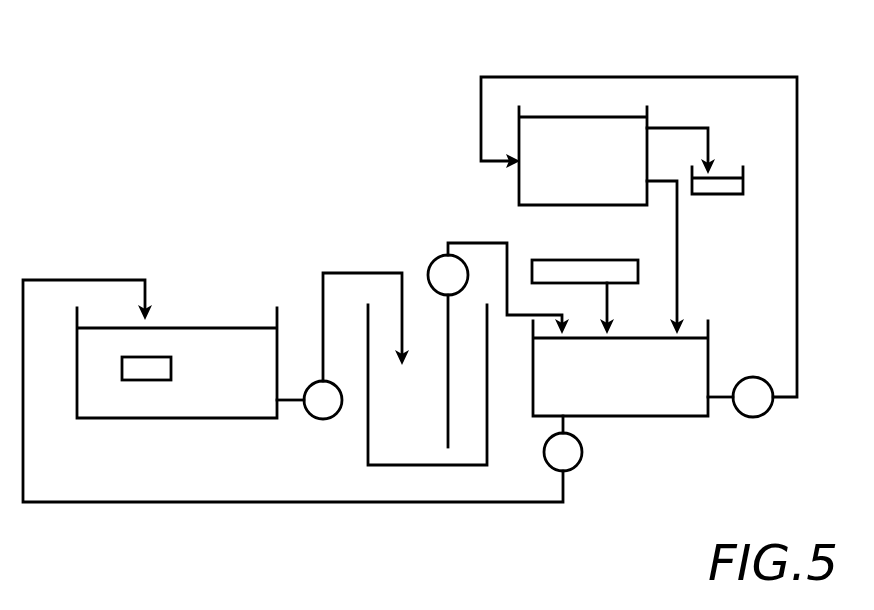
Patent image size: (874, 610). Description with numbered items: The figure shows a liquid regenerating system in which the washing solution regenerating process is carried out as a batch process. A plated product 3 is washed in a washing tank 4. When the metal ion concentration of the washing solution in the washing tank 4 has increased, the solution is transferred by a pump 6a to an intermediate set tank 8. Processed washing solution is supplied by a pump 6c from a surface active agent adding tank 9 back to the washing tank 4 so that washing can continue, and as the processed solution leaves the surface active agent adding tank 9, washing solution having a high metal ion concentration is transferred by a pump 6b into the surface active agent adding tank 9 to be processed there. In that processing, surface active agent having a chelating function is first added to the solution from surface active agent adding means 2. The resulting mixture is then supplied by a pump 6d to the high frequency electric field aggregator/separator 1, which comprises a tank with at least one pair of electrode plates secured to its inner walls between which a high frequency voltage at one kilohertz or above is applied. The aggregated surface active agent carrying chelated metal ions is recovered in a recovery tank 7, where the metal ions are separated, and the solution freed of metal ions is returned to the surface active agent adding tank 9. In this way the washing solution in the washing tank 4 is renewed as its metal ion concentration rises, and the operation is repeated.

The high frequency electric field aggregator/separator 1 is at (583, 143).
The surface active agent adding means 2 is at (580, 265).
The plated product 3 is at (128, 367).
The washing tank 4 is at (75, 405).
The pump 6a is at (316, 420).
The pump 6b is at (432, 262).
The pump 6c is at (582, 458).
The pump 6d is at (753, 418).
The recovery tank 7 is at (717, 188).
The intermediate set tank 8 is at (405, 465).
The surface active agent adding tank 9 is at (652, 416).